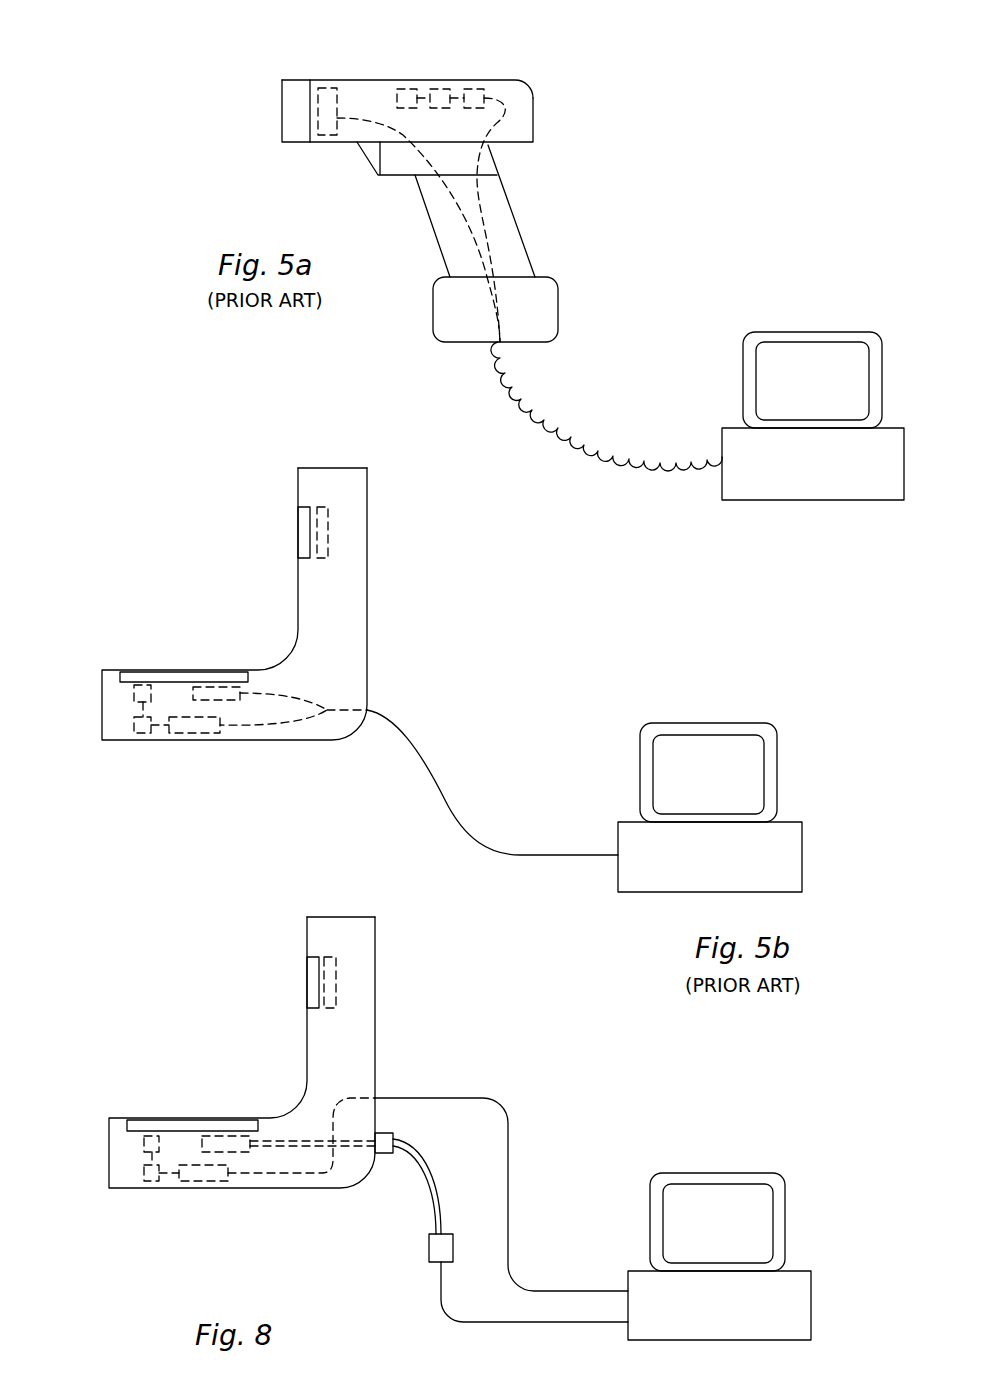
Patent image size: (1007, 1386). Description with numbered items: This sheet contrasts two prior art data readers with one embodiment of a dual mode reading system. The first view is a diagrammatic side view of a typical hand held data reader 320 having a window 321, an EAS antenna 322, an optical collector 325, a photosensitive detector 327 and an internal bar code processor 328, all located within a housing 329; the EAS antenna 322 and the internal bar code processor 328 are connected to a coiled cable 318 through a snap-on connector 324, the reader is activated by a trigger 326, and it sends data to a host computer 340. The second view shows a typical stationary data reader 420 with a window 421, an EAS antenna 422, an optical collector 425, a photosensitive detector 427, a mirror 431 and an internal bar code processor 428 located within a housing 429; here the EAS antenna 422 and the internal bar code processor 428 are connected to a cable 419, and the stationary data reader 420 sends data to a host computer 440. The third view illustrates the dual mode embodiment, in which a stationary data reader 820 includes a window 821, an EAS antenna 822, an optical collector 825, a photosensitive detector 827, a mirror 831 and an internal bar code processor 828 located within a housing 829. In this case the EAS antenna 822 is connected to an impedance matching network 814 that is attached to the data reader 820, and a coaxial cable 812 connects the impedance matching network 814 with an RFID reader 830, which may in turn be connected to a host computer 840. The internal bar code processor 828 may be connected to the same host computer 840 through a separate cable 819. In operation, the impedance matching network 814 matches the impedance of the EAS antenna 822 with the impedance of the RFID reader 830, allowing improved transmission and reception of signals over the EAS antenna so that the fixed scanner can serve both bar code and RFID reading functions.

In FIG. 5A, the coiled cable 318 is at (563, 432).
In FIG. 5A, the hand held data reader 320 is at (537, 95).
In FIG. 5A, the window 321 is at (289, 80).
In FIG. 5A, the EAS antenna 322 is at (330, 88).
In FIG. 5A, the snap-on connector 324 is at (558, 290).
In FIG. 5A, the optical collector 325 is at (406, 89).
In FIG. 5A, the trigger 326 is at (360, 152).
In FIG. 5A, the photosensitive detector 327 is at (441, 89).
In FIG. 5A, the internal bar code processor 328 is at (476, 89).
In FIG. 5A, the housing 329 is at (518, 80).
In FIG. 5A, the host computer 340 is at (905, 448).
In FIG. 5B, the cable 419 is at (428, 760).
In FIG. 5B, the stationary data reader 420 is at (370, 485).
In FIG. 5B, the window 421 is at (298, 527).
In FIG. 5B, the EAS antenna 422 is at (214, 687).
In FIG. 5B, the optical collector 425 is at (134, 693).
In FIG. 5B, the photosensitive detector 427 is at (143, 733).
In FIG. 5B, the internal bar code processor 428 is at (208, 733).
In FIG. 5B, the housing 429 is at (325, 468).
In FIG. 5B, the mirror 431 is at (328, 533).
In FIG. 5B, the host computer 440 is at (802, 840).
In FIG. 8, the coaxial cable 812 is at (433, 1200).
In FIG. 8, the impedance matching network 814 is at (395, 1137).
In FIG. 8, the separate cable 819 is at (510, 1165).
In FIG. 8, the stationary data reader 820 is at (378, 940).
In FIG. 8, the window 821 is at (307, 978).
In FIG. 8, the EAS antenna 822 is at (222, 1118).
In FIG. 8, the optical collector 825 is at (144, 1142).
In FIG. 8, the photosensitive detector 827 is at (150, 1181).
In FIG. 8, the internal bar code processor 828 is at (218, 1181).
In FIG. 8, the housing 829 is at (333, 917).
In FIG. 8, the RFID reader 830 is at (430, 1250).
In FIG. 8, the mirror 831 is at (336, 995).
In FIG. 8, the host computer 840 is at (811, 1290).